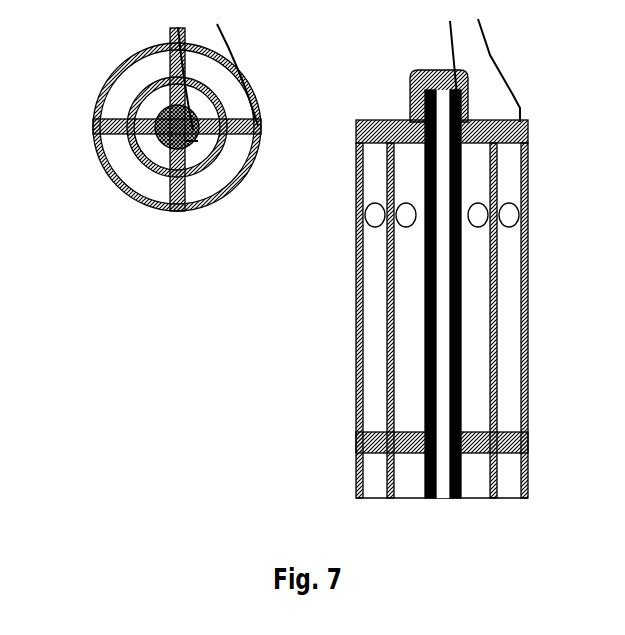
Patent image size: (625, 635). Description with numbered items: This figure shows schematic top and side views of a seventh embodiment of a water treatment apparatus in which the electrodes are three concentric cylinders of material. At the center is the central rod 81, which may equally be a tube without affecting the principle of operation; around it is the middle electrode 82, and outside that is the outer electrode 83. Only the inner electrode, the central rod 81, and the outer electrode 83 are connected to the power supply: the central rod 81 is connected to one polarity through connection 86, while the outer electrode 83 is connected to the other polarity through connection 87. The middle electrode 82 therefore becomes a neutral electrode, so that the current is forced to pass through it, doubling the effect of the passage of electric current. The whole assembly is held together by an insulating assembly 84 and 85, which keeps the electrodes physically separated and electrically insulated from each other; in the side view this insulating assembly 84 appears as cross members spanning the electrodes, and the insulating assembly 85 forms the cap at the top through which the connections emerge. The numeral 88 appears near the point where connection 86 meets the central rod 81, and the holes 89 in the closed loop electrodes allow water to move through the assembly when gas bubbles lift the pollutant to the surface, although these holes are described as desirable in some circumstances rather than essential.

The central rod 81 is at (164, 139).
The middle electrode 82 is at (125, 108).
The outer electrode 83 is at (107, 73).
The insulating assembly 84 is at (169, 165).
The insulating assembly 85 is at (409, 83).
The connection 86 is at (184, 28).
The connection 87 is at (238, 59).
The connection point 88 is at (198, 142).
The holes 89 is at (367, 213).